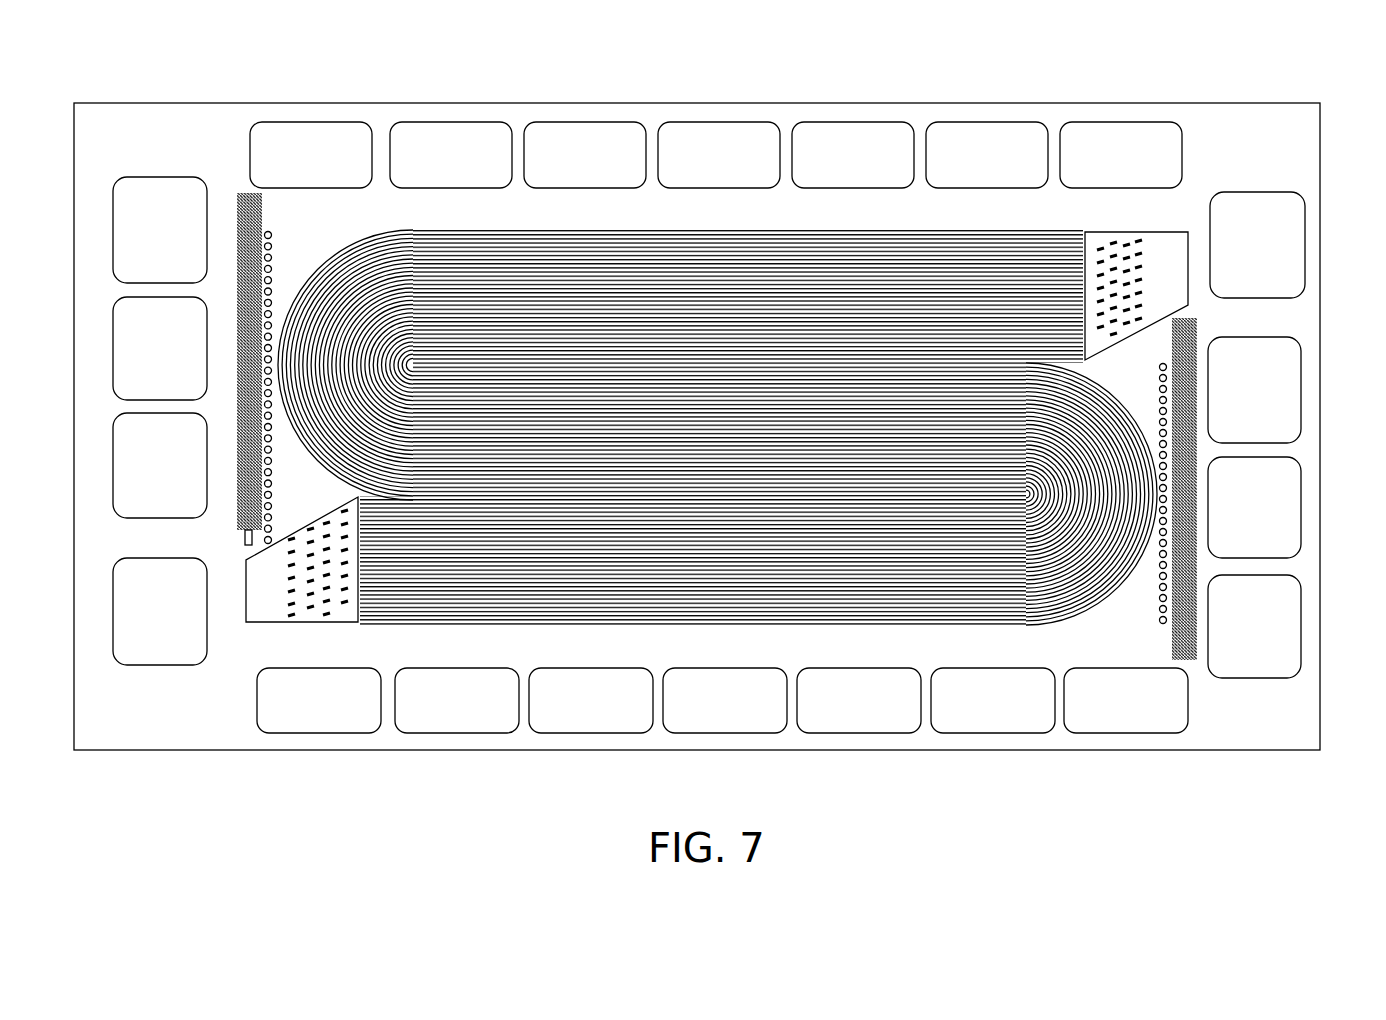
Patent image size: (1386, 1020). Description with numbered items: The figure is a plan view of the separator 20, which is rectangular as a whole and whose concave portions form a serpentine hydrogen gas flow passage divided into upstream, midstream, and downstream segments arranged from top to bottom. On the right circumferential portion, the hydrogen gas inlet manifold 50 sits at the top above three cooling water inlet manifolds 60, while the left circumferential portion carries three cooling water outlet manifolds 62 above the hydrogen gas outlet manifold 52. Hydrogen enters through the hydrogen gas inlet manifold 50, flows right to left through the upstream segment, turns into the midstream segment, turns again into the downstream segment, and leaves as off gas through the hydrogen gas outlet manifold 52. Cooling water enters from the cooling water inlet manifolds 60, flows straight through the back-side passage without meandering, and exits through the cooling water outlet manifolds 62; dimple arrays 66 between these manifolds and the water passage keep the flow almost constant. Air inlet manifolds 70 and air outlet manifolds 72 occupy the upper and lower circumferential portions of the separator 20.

The separator 20 is at (887, 103).
The hydrogen gas inlet manifold 50 is at (1272, 257).
The hydrogen gas outlet manifold 52 is at (175, 621).
The cooling water inlet manifolds 60 is at (1270, 401).
The cooling water outlet manifolds 62 is at (175, 241).
The dimple arrays 66 is at (242, 193).
The air inlet manifolds 70 is at (328, 170).
The air outlet manifolds 72 is at (333, 714).